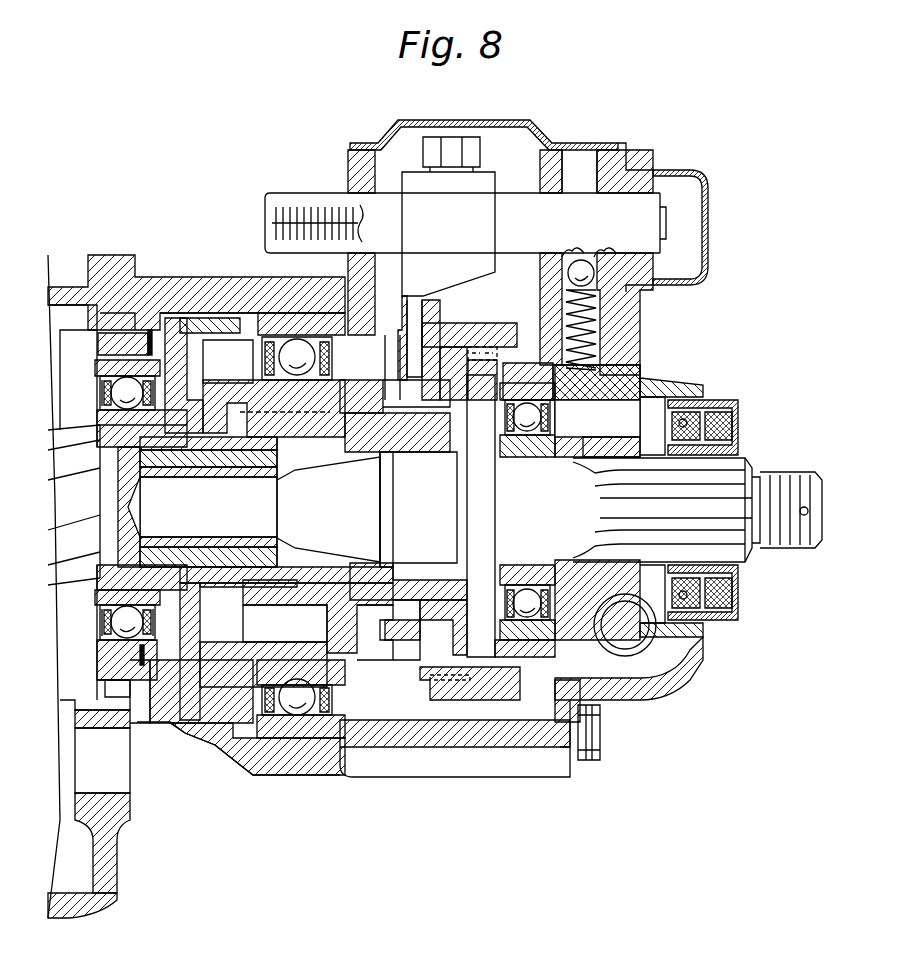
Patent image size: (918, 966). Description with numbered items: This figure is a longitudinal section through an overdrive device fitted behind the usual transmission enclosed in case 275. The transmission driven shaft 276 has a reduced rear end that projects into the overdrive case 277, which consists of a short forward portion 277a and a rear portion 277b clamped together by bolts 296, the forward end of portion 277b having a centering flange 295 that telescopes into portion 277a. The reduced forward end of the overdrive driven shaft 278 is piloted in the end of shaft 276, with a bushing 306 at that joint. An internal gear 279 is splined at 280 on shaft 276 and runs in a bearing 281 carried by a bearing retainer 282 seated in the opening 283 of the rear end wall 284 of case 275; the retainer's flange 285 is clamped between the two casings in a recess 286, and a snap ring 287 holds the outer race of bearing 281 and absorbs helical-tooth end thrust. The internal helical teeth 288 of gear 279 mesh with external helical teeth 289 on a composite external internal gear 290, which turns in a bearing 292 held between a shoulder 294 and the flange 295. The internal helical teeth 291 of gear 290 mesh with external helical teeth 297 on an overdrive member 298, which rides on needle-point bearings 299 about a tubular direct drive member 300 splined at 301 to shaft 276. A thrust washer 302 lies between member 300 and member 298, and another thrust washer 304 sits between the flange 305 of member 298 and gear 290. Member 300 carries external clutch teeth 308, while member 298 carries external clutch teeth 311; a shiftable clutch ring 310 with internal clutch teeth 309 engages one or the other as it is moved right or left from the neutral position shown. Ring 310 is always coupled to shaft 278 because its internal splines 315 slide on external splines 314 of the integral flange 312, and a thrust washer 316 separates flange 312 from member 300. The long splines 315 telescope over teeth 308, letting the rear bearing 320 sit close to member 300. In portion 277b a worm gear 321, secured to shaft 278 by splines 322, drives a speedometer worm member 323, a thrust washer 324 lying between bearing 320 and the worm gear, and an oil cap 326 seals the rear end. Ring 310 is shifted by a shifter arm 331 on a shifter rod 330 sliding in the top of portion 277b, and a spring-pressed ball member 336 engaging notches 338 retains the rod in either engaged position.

The case 275 is at (80, 915).
The shaft 276 is at (68, 550).
The case 277 is at (178, 272).
The forward portion of case 277a is at (195, 730).
The rear portion of case 277b is at (434, 742).
The driven shaft 278 is at (368, 519).
The internal gear 279 is at (195, 310).
The spline 280 is at (158, 465).
The bearing 281 is at (110, 368).
The bearing retainer 282 is at (108, 344).
The opening 283 is at (115, 324).
The rear end wall 284 is at (118, 855).
The flange 285 is at (150, 325).
The recess 286 is at (165, 725).
The snap ring 287 is at (138, 655).
The internal helical teeth 288 is at (215, 345).
The external helical teeth 289 is at (230, 385).
The external internal gear 290 is at (200, 410).
The internal helical teeth 291 is at (278, 445).
The bearing 292 is at (290, 340).
The shoulder 294 is at (248, 730).
The centering flange 295 is at (345, 760).
The bolts 296 is at (602, 730).
The external helical teeth 297 is at (252, 608).
The overdrive member 298 is at (335, 442).
The needle-point bearings 299 is at (295, 580).
The direct drive member 300 is at (370, 447).
The spline 301 is at (212, 466).
The thrust washer 302 is at (397, 590).
The thrust washer 304 is at (340, 665).
The flange 305 is at (370, 660).
The bushing 306 is at (185, 538).
The external clutch teeth 308 is at (490, 450).
The internal clutch teeth 309 is at (418, 440).
The shiftable clutch ring 310 is at (426, 355).
The external clutch teeth 311 is at (383, 360).
The flange 312 is at (484, 520).
The external splines 314 is at (488, 346).
The internal splines 315 is at (505, 325).
The thrust washer 316 is at (452, 455).
The rear bearing 320 is at (548, 417).
The worm gear 321 is at (622, 440).
The splines 322 is at (690, 496).
The worm member 323 is at (610, 640).
The thrust washer 324 is at (566, 578).
The oil cap 326 is at (720, 403).
The shifter rod 330 is at (512, 208).
The shifter arm 331 is at (420, 200).
The spring-pressed ball member 336 is at (568, 272).
The notches 338 is at (606, 250).